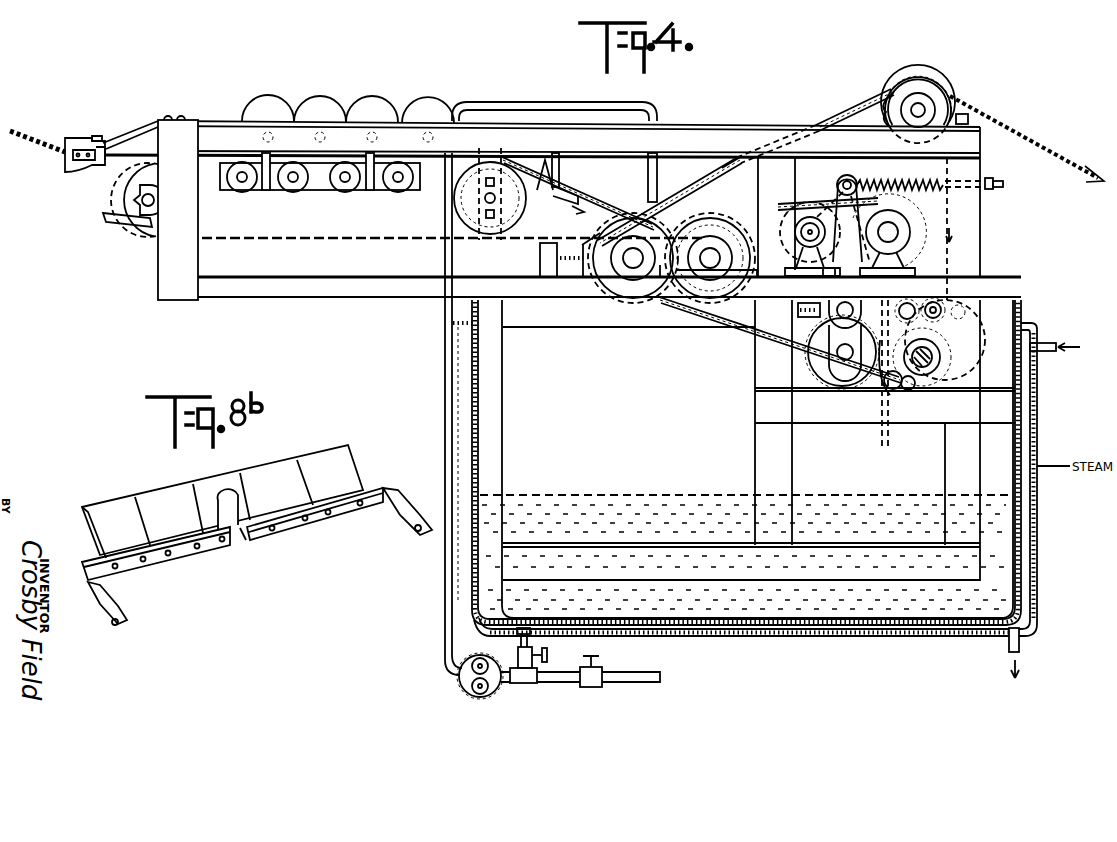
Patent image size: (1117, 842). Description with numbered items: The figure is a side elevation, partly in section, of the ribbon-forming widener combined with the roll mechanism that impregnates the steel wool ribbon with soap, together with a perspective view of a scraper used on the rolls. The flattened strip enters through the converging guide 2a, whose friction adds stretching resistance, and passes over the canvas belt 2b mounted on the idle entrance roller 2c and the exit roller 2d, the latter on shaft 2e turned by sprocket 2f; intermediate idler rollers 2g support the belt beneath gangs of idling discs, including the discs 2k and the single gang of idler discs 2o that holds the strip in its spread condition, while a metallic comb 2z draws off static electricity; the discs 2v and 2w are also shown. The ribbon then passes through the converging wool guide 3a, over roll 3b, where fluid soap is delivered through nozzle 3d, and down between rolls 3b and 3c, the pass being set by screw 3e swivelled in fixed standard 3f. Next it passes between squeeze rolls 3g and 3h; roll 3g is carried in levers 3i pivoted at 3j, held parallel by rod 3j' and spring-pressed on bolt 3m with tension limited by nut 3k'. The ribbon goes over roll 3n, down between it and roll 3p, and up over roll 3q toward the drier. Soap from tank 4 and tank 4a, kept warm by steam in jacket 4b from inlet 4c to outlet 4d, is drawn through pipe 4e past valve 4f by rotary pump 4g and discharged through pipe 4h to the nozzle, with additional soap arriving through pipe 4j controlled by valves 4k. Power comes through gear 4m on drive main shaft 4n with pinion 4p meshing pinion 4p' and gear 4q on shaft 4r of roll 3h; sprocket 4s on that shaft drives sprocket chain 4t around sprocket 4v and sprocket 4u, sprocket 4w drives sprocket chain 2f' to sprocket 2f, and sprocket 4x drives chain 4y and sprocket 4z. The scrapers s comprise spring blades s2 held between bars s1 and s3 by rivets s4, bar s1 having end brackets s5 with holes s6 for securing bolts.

In FIG. 4, the converging guide 2a is at (100, 140).
In FIG. 4, the canvas belt 2b is at (283, 240).
In FIG. 4, the idle entrance roller 2c is at (118, 188).
In FIG. 4, the metallic comb 2z is at (104, 214).
In FIG. 4, the roller 2v is at (268, 102).
In FIG. 4, the discs of second set 2k is at (322, 103).
In FIG. 4, the roller 2w is at (374, 103).
In FIG. 4, the single gang of idler discs 2o is at (432, 103).
In FIG. 4, the intermediate idler rollers 2g is at (336, 190).
In FIG. 4, the exit roller 2d is at (462, 196).
In FIG. 4, the shaft 2e is at (470, 208).
In FIG. 4, the sprocket 2f is at (578, 194).
In FIG. 4, the sprocket chain 2f' is at (606, 205).
In FIG. 4, the converging wool guide 3a is at (560, 198).
In FIG. 4, the roll 3b is at (644, 215).
In FIG. 4, the roll 3c is at (733, 228).
In FIG. 4, the nozzle 3d is at (657, 192).
In FIG. 4, the screw 3e is at (575, 247).
In FIG. 4, the fixed standard 3f is at (540, 268).
In FIG. 4, the driven roll 3g is at (826, 394).
In FIG. 4, the driving roll 3h is at (955, 360).
In FIG. 4, the levers 3i is at (828, 316).
In FIG. 4, the pivot 3j is at (845, 340).
In FIG. 4, the rod 3j' is at (846, 216).
In FIG. 4, the nut 3k' is at (983, 197).
In FIG. 4, the bolt 3m is at (900, 182).
In FIG. 4, the roll 3n is at (915, 230).
In FIG. 4, the roll 3p is at (788, 214).
In FIG. 4, the roll 3q is at (925, 78).
In FIG. 4, the tank 4 is at (1040, 383).
In FIG. 4, the tank 4a is at (1022, 418).
In FIG. 4, the jacket 4b is at (1037, 440).
In FIG. 4, the inlet 4c is at (1052, 343).
In FIG. 4, the outlet 4d is at (1008, 640).
In FIG. 4, the pipe 4e is at (560, 640).
In FIG. 4, the valve 4f is at (528, 684).
In FIG. 4, the rotary pump 4g is at (478, 700).
In FIG. 4, the pipe 4h is at (880, 400).
In FIG. 4, the pipe 4j is at (645, 684).
In FIG. 4, the valves 4k is at (590, 688).
In FIG. 4, the gear 4m is at (940, 322).
In FIG. 4, the drive main shaft 4n is at (931, 302).
In FIG. 4, the pinion 4p is at (976, 300).
In FIG. 4, the pinion 4p' is at (893, 302).
In FIG. 4, the gear 4q is at (893, 380).
In FIG. 4, the shaft 4r is at (907, 390).
In FIG. 4, the sprocket 4s is at (886, 386).
In FIG. 4, the sprocket chain 4t is at (835, 124).
In FIG. 4, the sprocket 4u is at (884, 100).
In FIG. 4, the sprocket 4v is at (655, 262).
In FIG. 4, the sprocket 4w is at (696, 246).
In FIG. 4, the sprocket 4x is at (750, 272).
In FIG. 4, the chain 4y is at (843, 187).
In FIG. 4, the sprocket 4z is at (962, 229).
In FIG. 4, the scrapers s is at (965, 110).
In FIG. 8b, the scrapers s is at (80, 539).
In FIG. 8b, the bar s1 is at (138, 566).
In FIG. 8b, the spring blades s2 is at (116, 500).
In FIG. 8b, the bar s3 is at (242, 532).
In FIG. 8b, the rivets s4 is at (200, 548).
In FIG. 8b, the end brackets s5 is at (92, 598).
In FIG. 8b, the holes s6 is at (110, 630).